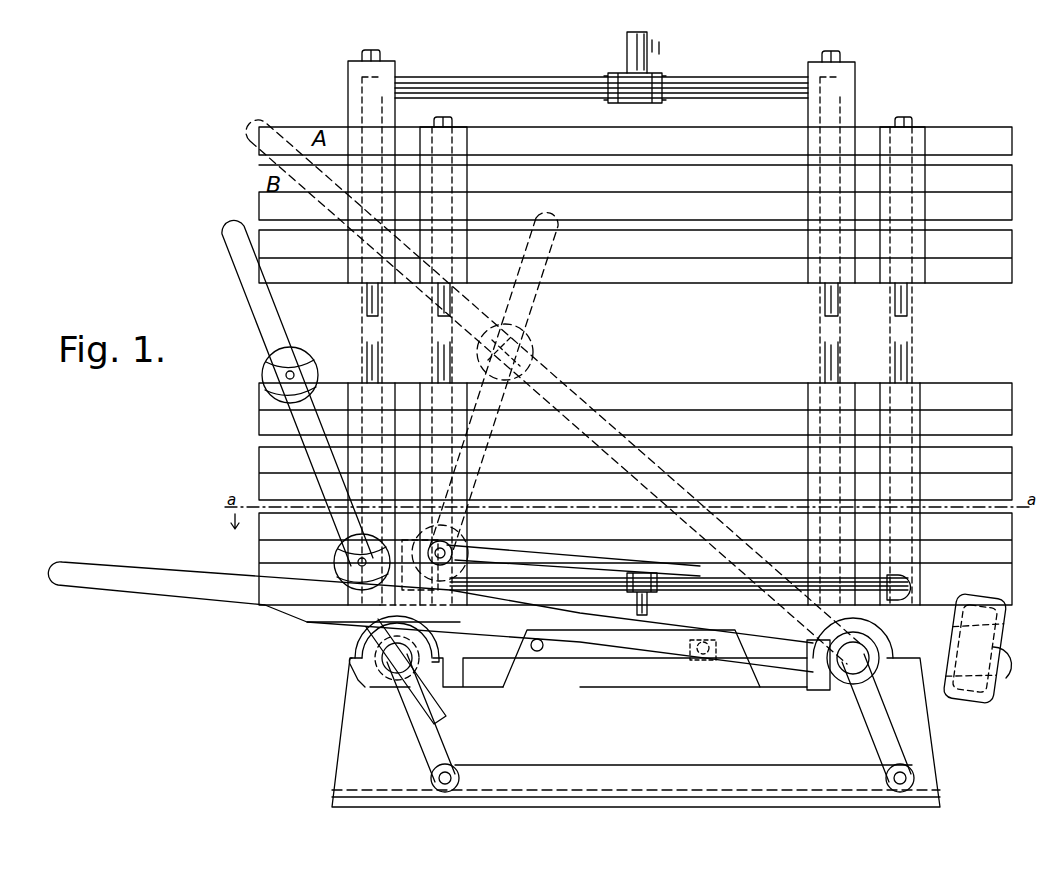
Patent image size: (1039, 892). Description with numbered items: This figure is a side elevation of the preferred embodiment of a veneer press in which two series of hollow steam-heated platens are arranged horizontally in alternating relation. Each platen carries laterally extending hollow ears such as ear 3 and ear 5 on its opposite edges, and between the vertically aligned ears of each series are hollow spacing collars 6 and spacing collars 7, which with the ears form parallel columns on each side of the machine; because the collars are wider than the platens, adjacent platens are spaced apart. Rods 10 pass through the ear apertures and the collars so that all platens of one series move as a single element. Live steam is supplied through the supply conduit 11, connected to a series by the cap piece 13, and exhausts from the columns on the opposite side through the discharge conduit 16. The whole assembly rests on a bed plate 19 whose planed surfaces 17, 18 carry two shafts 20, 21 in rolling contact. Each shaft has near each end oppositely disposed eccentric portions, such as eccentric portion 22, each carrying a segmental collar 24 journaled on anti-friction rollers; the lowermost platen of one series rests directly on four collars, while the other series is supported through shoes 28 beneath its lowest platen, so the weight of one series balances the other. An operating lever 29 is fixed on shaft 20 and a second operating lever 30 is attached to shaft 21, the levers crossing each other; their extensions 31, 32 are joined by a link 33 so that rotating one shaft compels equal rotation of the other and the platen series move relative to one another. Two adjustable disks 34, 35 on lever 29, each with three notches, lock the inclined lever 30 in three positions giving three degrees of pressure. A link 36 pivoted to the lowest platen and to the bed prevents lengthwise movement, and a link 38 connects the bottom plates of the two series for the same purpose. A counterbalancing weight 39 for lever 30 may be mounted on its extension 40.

The hollow ear 3 is at (458, 546).
The hollow ear 5 is at (428, 540).
The spacing collar 6 is at (356, 421).
The spacing collar 7 is at (458, 192).
The rod 10 is at (438, 350).
The supply conduit 11 is at (647, 58).
The cap piece 13 is at (354, 94).
The discharge conduit 16 is at (676, 574).
The planed surface 17 is at (444, 690).
The planed surface 18 is at (820, 685).
The bed plate 19 is at (636, 732).
The shaft 20 is at (358, 678).
The shaft 21 is at (858, 682).
The eccentric portion 22 is at (370, 655).
The segmental collar 24 is at (436, 658).
The shoe 28 is at (928, 612).
The operating lever 29 is at (250, 300).
The operating lever 30 is at (430, 617).
The extension 31 is at (438, 754).
The extension 32 is at (868, 754).
The link 33 is at (826, 775).
The adjustable disk 34 is at (350, 559).
The adjustable disk 35 is at (270, 373).
The link 36 is at (650, 660).
The link 38 is at (566, 564).
The counterbalancing weight 39 is at (975, 648).
The extension 40 is at (956, 666).